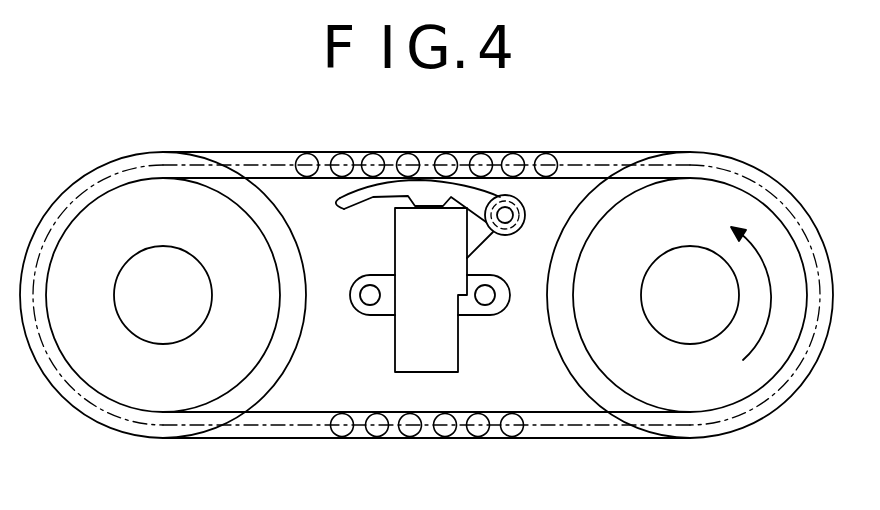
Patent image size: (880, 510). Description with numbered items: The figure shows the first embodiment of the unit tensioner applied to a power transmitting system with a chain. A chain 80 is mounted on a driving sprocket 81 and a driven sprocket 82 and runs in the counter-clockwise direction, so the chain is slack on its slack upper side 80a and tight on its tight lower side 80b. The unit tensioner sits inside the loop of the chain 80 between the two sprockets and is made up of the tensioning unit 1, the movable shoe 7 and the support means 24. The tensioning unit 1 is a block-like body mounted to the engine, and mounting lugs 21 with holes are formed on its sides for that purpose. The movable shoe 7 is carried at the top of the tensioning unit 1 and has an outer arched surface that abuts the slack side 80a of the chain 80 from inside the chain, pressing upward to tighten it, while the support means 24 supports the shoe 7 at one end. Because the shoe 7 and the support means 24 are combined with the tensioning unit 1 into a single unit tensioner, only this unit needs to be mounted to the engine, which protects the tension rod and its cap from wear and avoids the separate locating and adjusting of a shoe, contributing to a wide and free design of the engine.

The tensioning unit 1 is at (398, 343).
The movable shoe 7 is at (377, 195).
The mounting lug with hole 21 is at (362, 317).
The support means 24 is at (487, 242).
The chain 80 is at (580, 162).
The slack upper side 80a is at (433, 152).
The tight lower side 80b is at (390, 438).
The driving sprocket 81 is at (712, 198).
The driven sprocket 82 is at (167, 197).